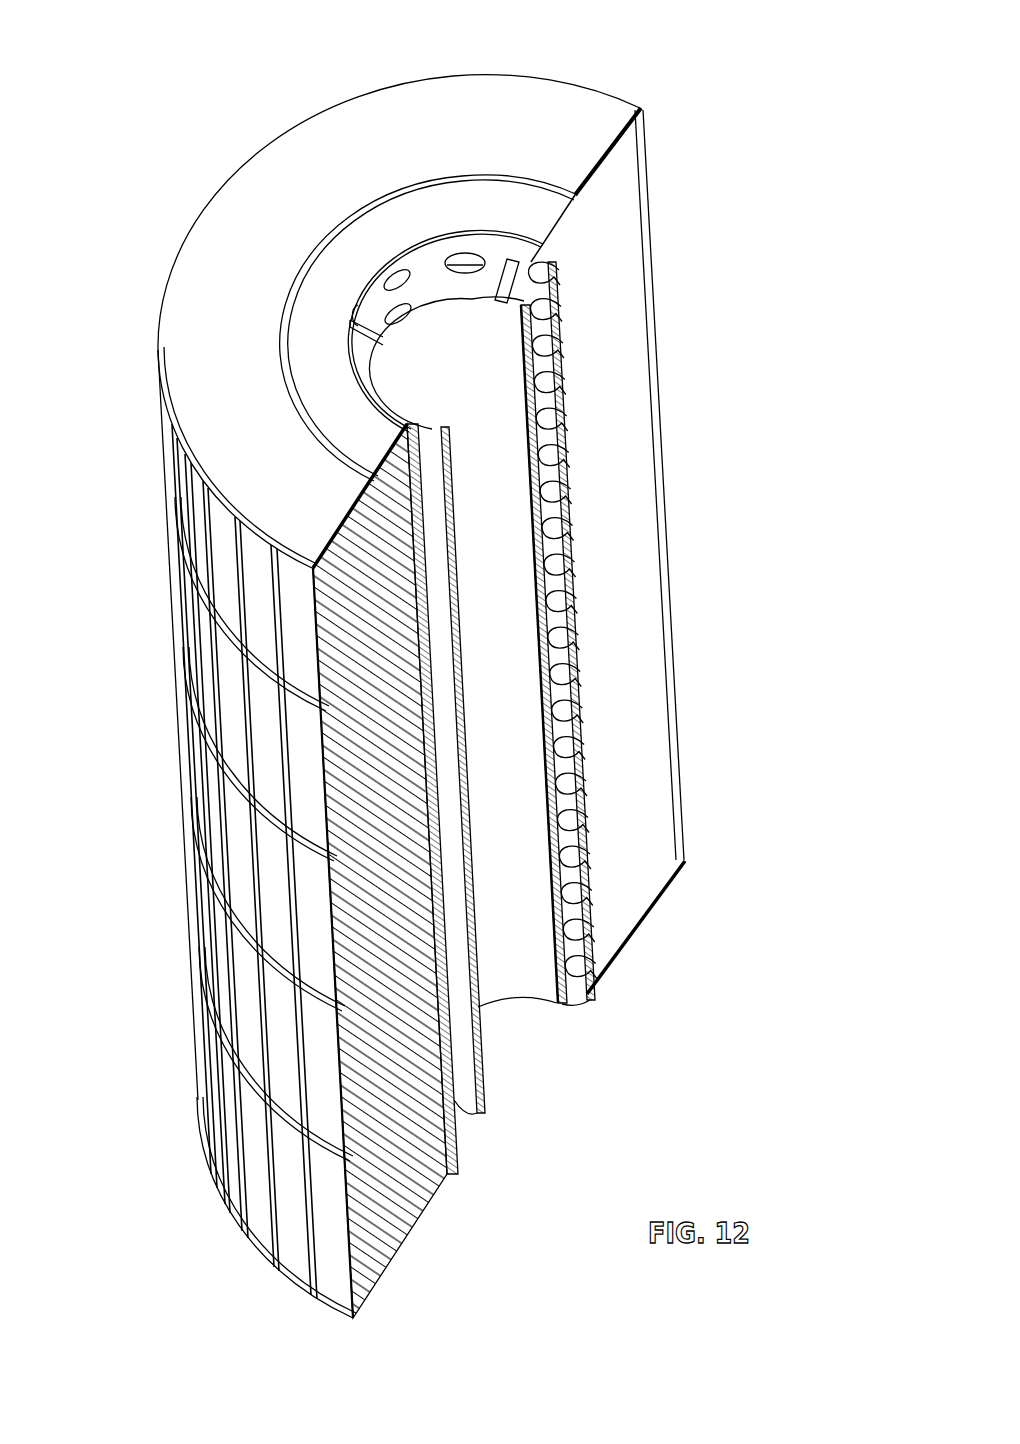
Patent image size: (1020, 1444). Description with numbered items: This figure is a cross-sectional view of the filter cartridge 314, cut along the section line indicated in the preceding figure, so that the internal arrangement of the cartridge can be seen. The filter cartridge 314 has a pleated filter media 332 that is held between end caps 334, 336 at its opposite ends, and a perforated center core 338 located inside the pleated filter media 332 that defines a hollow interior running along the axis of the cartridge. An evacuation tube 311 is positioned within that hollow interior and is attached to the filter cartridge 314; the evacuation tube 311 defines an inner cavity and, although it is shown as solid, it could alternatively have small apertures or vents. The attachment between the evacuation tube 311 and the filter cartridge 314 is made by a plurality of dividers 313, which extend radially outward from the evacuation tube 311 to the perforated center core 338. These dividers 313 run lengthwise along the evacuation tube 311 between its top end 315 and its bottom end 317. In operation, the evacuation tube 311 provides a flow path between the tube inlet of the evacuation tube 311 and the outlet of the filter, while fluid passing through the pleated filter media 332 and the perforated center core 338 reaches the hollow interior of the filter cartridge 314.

The evacuation tube 311 is at (495, 572).
The dividers 313 is at (510, 297).
The filter cartridge 314 is at (703, 62).
The top end 315 is at (478, 312).
The bottom end 317 is at (513, 998).
The pleated filter media 332 is at (241, 852).
The end cap 334 is at (201, 297).
The end cap 336 is at (380, 1272).
The perforated center core 338 is at (396, 272).